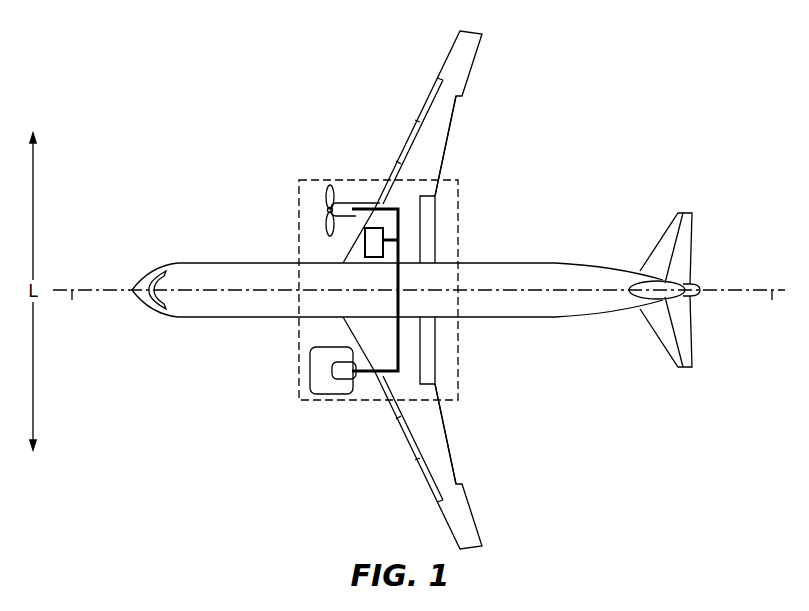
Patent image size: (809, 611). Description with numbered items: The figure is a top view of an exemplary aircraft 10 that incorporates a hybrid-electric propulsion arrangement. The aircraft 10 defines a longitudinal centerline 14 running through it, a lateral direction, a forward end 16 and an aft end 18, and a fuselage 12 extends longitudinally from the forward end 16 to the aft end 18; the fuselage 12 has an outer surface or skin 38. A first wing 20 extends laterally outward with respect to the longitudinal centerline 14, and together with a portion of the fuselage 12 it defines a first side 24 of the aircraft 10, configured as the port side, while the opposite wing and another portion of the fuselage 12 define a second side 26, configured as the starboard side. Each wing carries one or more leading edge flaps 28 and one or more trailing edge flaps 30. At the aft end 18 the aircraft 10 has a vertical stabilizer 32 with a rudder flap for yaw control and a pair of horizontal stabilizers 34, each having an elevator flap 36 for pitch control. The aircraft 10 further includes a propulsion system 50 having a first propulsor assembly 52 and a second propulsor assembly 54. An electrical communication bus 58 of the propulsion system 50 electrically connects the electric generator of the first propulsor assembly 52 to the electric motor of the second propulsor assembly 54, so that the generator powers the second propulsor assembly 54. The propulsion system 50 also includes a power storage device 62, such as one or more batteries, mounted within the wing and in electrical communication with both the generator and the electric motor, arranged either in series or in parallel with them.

The aircraft 10 is at (576, 106).
The fuselage 12 is at (178, 318).
The longitudinal centerline 14 is at (419, 313).
The forward end 16 is at (136, 313).
The aft end 18 is at (680, 296).
The first wing 20 is at (434, 290).
The first side 24 is at (314, 412).
The second side 26 is at (372, 295).
The leading edge flaps 28 is at (404, 441).
The trailing edge flaps 30 is at (451, 443).
The vertical stabilizer 32 is at (681, 297).
The horizontal stabilizers 34 is at (672, 231).
The elevator flap 36 is at (688, 232).
The outer surface or skin 38 is at (538, 310).
The propulsion system 50 is at (460, 218).
The first propulsor assembly 52 is at (323, 398).
The second propulsor assembly 54 is at (372, 183).
The electrical communication bus 58 is at (412, 211).
The power storage device 62 is at (362, 249).